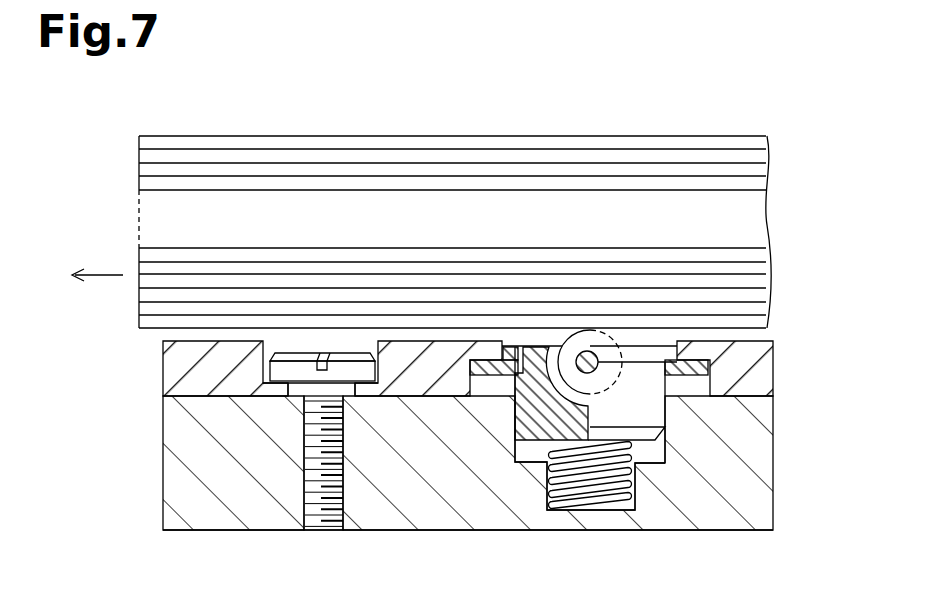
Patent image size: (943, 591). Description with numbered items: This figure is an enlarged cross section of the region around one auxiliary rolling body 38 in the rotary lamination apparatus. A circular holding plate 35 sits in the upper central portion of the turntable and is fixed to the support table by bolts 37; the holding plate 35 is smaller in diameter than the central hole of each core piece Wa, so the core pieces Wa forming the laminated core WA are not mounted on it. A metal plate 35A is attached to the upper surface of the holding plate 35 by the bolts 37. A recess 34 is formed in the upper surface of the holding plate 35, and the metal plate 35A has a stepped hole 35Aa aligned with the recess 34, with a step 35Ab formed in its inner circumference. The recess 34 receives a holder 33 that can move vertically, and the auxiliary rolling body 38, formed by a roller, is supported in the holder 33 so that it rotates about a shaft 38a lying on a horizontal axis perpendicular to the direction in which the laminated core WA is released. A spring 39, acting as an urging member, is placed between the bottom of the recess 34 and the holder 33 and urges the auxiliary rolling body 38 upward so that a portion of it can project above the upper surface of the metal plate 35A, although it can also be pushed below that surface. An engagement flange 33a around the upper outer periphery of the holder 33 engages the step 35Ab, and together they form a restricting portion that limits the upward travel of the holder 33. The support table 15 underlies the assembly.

The laminated core WA is at (345, 135).
The core piece Wa is at (513, 167).
The metal plate 35A is at (162, 372).
The stepped hole 35Aa is at (650, 340).
The step 35Ab is at (692, 346).
The holding plate 35 is at (163, 455).
The support table 15 is at (163, 485).
The bolt 37 is at (304, 452).
The holder 33 is at (647, 405).
The engagement flange 33a is at (708, 376).
The recess 34 is at (518, 455).
The auxiliary rolling body 38 is at (608, 379).
The shaft 38a is at (590, 364).
The spring 39 is at (594, 500).